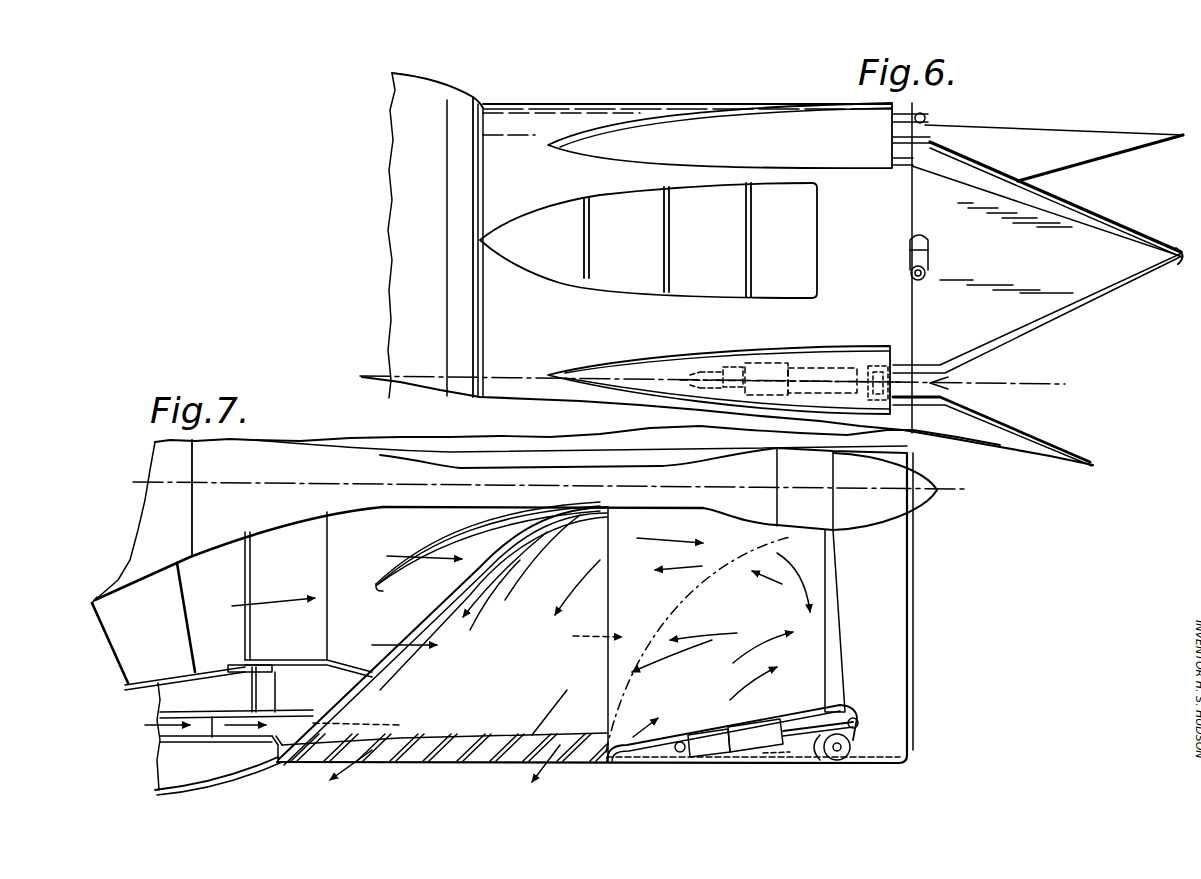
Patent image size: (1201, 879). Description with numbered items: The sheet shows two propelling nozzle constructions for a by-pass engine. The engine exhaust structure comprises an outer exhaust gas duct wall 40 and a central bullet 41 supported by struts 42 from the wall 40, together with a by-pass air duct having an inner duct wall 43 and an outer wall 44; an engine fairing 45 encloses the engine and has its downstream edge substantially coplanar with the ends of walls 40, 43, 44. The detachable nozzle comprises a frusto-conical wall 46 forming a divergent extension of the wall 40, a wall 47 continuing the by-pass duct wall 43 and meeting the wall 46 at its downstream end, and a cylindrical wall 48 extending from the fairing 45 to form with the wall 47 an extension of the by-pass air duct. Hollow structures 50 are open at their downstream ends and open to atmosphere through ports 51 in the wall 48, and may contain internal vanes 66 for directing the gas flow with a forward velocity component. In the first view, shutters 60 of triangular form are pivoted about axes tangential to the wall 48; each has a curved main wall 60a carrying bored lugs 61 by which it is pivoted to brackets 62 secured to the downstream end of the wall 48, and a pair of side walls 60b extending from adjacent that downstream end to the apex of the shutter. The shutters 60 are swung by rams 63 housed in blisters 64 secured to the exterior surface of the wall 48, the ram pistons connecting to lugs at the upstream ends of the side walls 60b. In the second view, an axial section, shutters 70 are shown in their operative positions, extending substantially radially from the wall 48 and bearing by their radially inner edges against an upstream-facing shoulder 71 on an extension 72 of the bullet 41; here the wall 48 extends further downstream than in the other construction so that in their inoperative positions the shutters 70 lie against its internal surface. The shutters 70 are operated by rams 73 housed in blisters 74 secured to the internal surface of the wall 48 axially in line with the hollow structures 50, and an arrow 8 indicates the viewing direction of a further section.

In FIG. 7, the exhaust flow arrow 8 is at (477, 766).
In FIG. 7, the outer exhaust gas duct wall 40 is at (147, 681).
In FIG. 7, the central bullet 41 is at (135, 553).
In FIG. 7, the struts 42 is at (142, 636).
In FIG. 7, the inner duct wall 43 is at (162, 712).
In FIG. 7, the outer wall 44 is at (160, 742).
In FIG. 6, the engine fairing 45 is at (437, 90).
In FIG. 7, the engine fairing 45 is at (242, 773).
In FIG. 7, the frusto-conical wall 46 is at (415, 643).
In FIG. 7, the wall 47 is at (276, 717).
In FIG. 6, the cylindrical wall 48 is at (628, 117).
In FIG. 7, the cylindrical wall 48 is at (662, 745).
In FIG. 7, the hollow structures 50 is at (403, 630).
In FIG. 6, the ports 51 is at (578, 203).
In FIG. 7, the ports 51 is at (397, 752).
In FIG. 6, the shutters 60 is at (1058, 205).
In FIG. 6, the curved main wall 60a is at (1165, 258).
In FIG. 6, the side walls 60b is at (1113, 293).
In FIG. 6, the bored lugs 61 is at (921, 281).
In FIG. 6, the brackets 62 is at (929, 249).
In FIG. 6, the rams 63 is at (817, 366).
In FIG. 6, the blisters 64 is at (756, 117).
In FIG. 6, the internal vanes 66 is at (664, 242).
In FIG. 7, the shutters 70 is at (840, 602).
In FIG. 7, the upstream-facing shoulder 71 is at (840, 472).
In FIG. 7, the extension 72 is at (372, 470).
In FIG. 7, the rams 73 is at (757, 738).
In FIG. 7, the blisters 74 is at (713, 726).